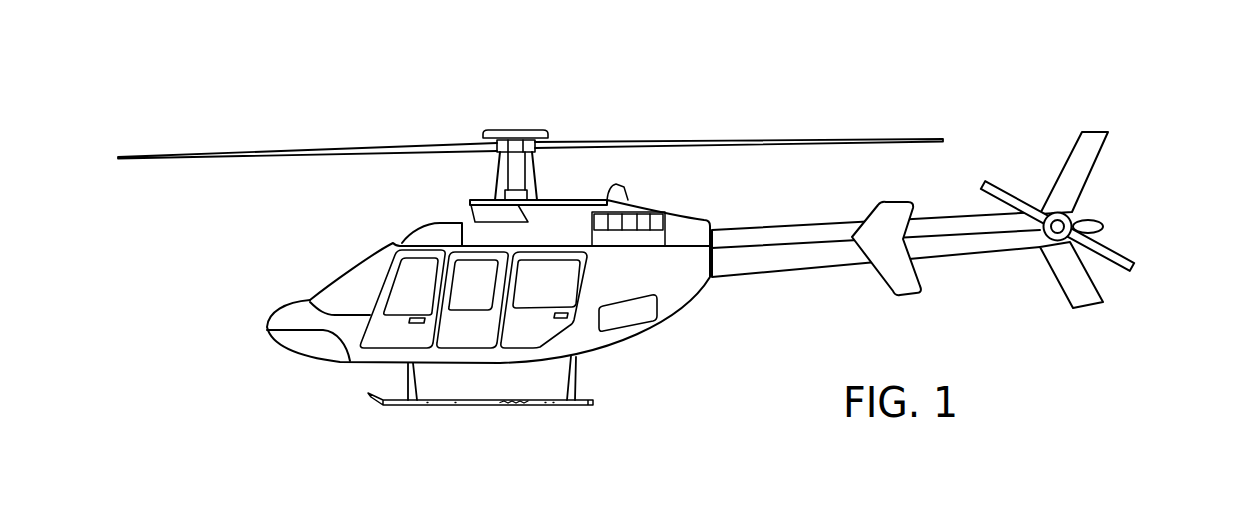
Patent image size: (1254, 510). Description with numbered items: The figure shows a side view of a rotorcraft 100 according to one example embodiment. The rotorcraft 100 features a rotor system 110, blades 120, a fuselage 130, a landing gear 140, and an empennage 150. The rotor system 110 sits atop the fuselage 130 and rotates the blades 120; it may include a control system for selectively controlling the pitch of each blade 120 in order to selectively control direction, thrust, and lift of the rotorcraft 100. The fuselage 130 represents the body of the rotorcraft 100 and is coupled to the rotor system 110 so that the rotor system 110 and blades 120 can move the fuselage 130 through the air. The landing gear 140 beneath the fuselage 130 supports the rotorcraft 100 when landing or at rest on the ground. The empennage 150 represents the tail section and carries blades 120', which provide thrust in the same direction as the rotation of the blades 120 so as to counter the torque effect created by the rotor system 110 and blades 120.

The rotorcraft 100 is at (666, 243).
The rotor system 110 is at (517, 128).
The blades 120 is at (530, 118).
The blades 120' is at (1098, 220).
The fuselage 130 is at (308, 360).
The landing gear 140 is at (460, 407).
The empennage 150 is at (790, 272).